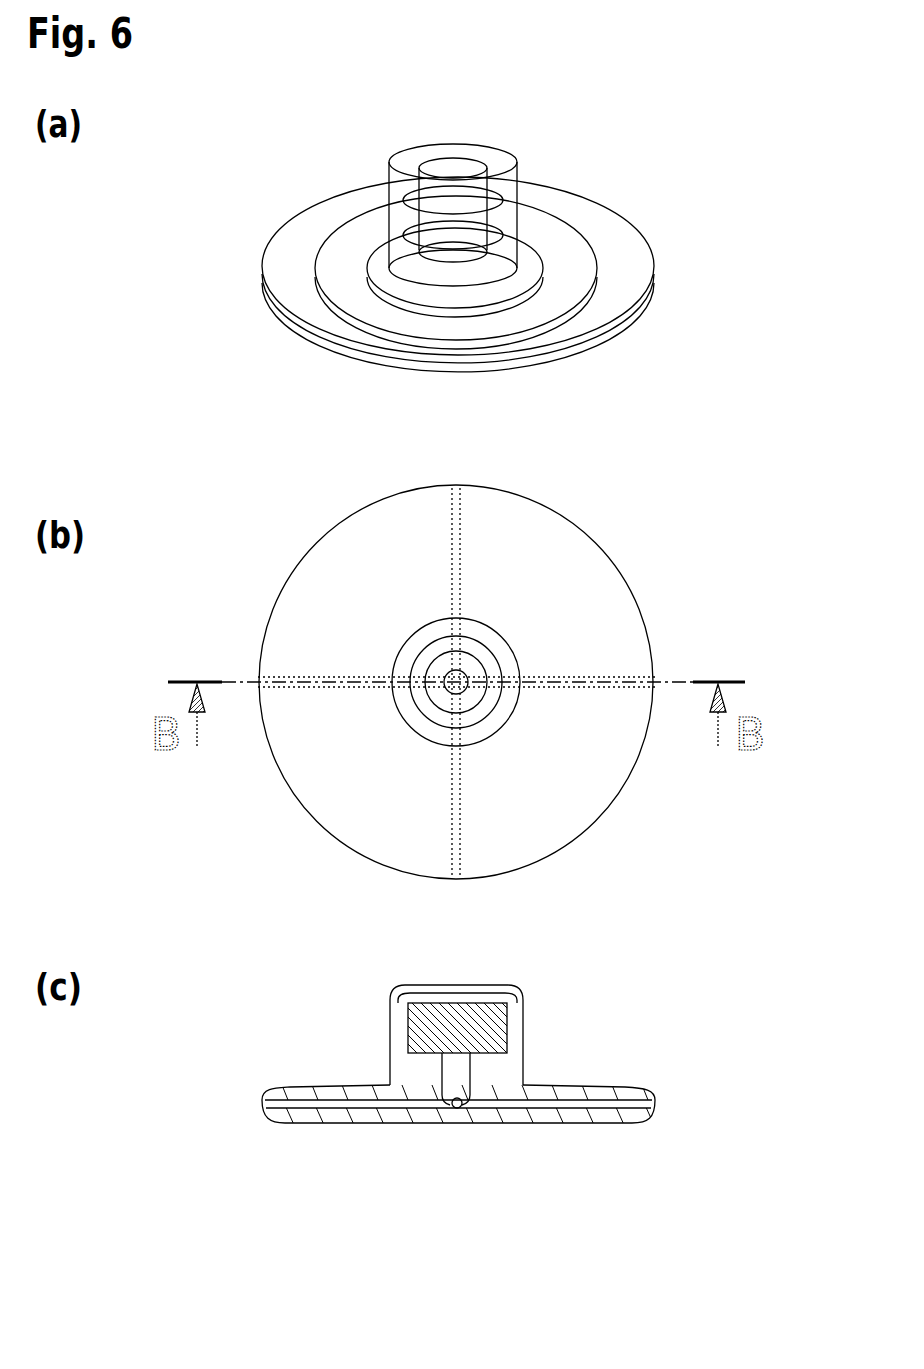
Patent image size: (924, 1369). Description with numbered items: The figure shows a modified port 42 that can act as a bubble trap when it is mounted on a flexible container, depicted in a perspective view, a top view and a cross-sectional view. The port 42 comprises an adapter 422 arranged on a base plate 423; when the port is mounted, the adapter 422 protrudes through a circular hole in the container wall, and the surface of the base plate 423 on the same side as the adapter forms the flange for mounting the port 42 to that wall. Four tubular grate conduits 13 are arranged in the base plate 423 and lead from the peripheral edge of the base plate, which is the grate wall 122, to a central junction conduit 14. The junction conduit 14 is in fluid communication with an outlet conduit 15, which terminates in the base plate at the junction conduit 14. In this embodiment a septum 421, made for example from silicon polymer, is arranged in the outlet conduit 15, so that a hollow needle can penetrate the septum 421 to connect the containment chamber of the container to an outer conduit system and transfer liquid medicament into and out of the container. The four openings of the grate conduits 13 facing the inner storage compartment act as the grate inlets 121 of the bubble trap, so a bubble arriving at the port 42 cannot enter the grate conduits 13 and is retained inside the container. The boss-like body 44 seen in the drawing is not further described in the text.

The grate conduit 13 is at (433, 664).
The junction conduit 14 is at (377, 718).
The outlet conduit 15 is at (443, 1025).
The port 42 is at (486, 631).
The boss 44 is at (445, 591).
The grate inlet 121 is at (474, 760).
The grate wall 122 is at (200, 497).
The septum 421 is at (495, 958).
The adapter 422 is at (387, 184).
The base plate 423 is at (514, 725).